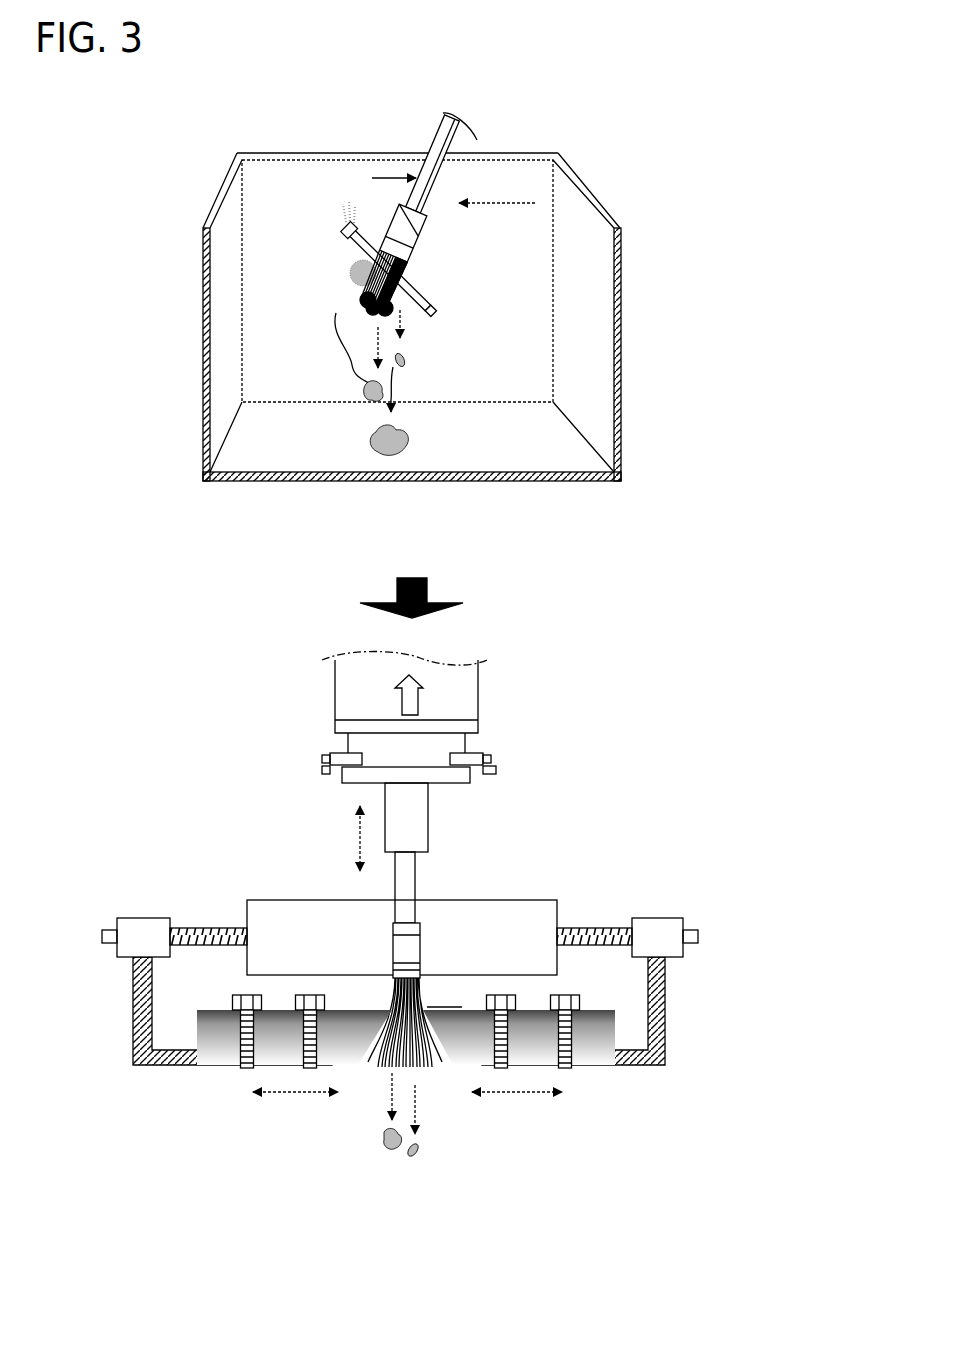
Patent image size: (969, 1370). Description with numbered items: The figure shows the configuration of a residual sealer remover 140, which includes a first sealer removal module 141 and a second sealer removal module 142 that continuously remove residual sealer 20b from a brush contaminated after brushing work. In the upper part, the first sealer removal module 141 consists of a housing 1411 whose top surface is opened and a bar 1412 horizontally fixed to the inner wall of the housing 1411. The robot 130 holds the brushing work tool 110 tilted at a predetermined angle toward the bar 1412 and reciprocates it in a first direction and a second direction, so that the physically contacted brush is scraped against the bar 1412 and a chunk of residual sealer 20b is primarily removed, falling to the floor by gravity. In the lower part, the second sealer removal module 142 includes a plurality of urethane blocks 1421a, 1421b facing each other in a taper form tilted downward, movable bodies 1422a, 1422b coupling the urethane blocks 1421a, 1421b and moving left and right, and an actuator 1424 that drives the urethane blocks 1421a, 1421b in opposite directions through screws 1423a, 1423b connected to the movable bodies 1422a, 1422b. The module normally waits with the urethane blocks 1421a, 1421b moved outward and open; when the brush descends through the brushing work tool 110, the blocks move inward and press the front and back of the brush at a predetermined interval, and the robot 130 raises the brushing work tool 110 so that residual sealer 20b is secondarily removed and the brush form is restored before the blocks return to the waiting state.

The residual sealer 20b is at (362, 302).
The brushing work tool 110 is at (506, 770).
The robot 130 is at (478, 690).
The residual sealer remover 140 is at (118, 627).
The first sealer removal module 141 is at (210, 511).
The second sealer removal module 142 is at (210, 847).
The housing 1411 is at (622, 340).
The bar 1412 is at (433, 311).
The urethane block 1421a is at (220, 1035).
The urethane block 1421b is at (593, 1033).
The movable body 1422a is at (140, 918).
The movable body 1422b is at (661, 918).
The screw 1423a is at (204, 928).
The screw 1423b is at (603, 928).
The actuator 1424 is at (486, 900).